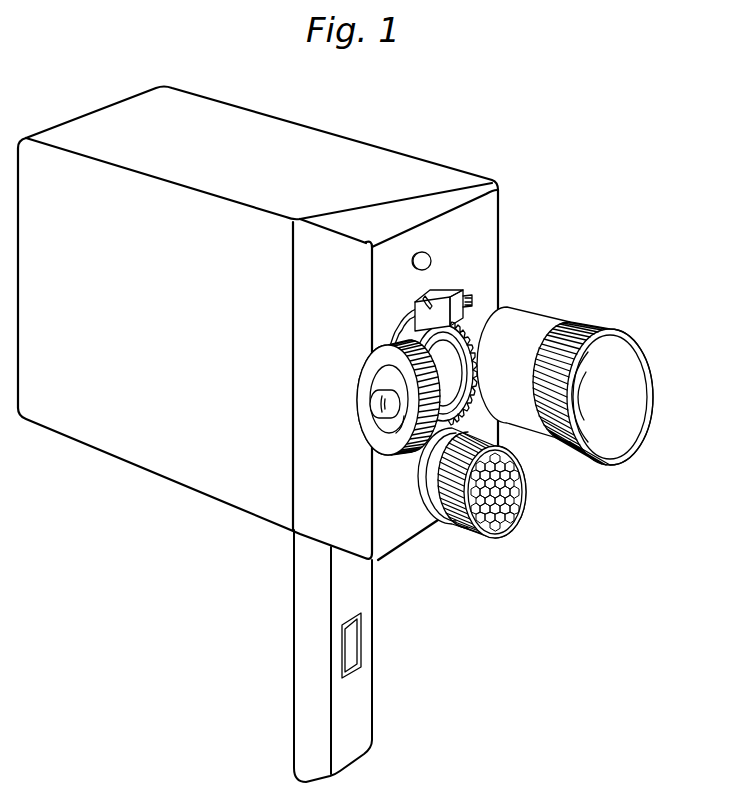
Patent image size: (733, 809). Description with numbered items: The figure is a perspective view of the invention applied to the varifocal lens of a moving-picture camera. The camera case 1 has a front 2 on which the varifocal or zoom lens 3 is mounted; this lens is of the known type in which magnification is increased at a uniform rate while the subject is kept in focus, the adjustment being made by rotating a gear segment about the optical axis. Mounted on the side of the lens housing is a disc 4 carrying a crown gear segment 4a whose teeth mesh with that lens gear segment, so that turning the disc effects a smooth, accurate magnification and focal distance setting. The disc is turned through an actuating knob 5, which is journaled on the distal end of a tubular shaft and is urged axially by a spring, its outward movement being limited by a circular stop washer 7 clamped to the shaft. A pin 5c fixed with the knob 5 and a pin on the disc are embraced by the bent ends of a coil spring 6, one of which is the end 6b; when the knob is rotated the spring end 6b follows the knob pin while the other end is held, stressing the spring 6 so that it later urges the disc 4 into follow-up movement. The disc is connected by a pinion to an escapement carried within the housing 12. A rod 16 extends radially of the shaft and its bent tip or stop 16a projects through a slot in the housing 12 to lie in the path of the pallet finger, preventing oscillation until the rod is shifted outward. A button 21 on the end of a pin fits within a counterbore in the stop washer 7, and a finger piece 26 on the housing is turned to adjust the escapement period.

The case 1 is at (174, 462).
The front 2 is at (403, 527).
The varifocal or zoom lens 3 is at (580, 400).
The disc 4 is at (474, 351).
The crown gear segment 4a is at (484, 326).
The actuating knob 5 is at (376, 405).
The pin 5c is at (393, 334).
The coil spring 6 is at (442, 386).
The spring end 6b is at (474, 353).
The stop washer 7 is at (400, 424).
The housing 12 is at (424, 281).
The rod 16 is at (421, 318).
The stop 16a is at (424, 305).
The button 21 is at (370, 408).
The finger piece 26 is at (468, 297).